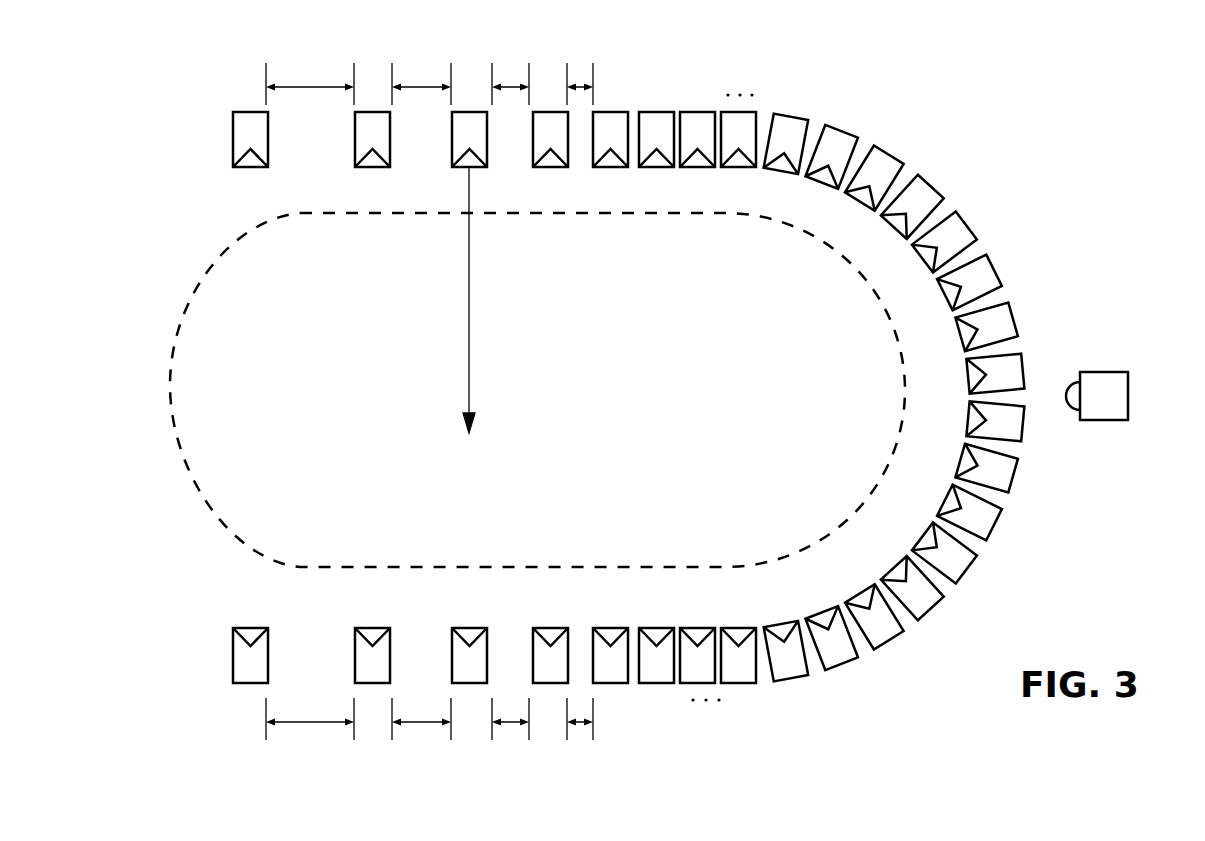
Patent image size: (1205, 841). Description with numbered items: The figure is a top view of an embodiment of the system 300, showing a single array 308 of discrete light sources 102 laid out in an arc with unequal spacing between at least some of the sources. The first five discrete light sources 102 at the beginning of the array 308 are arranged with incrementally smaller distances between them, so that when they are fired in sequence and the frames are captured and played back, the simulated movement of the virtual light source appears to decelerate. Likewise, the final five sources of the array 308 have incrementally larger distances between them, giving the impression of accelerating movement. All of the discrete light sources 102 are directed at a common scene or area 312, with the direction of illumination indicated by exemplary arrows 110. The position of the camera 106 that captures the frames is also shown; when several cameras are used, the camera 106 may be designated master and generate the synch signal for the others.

The system 300 is at (1002, 82).
The array 308 is at (1015, 233).
The discrete light sources 102 is at (997, 523).
The common scene or area 312 is at (232, 240).
The arrows 110 is at (472, 268).
The camera 106 is at (1101, 369).